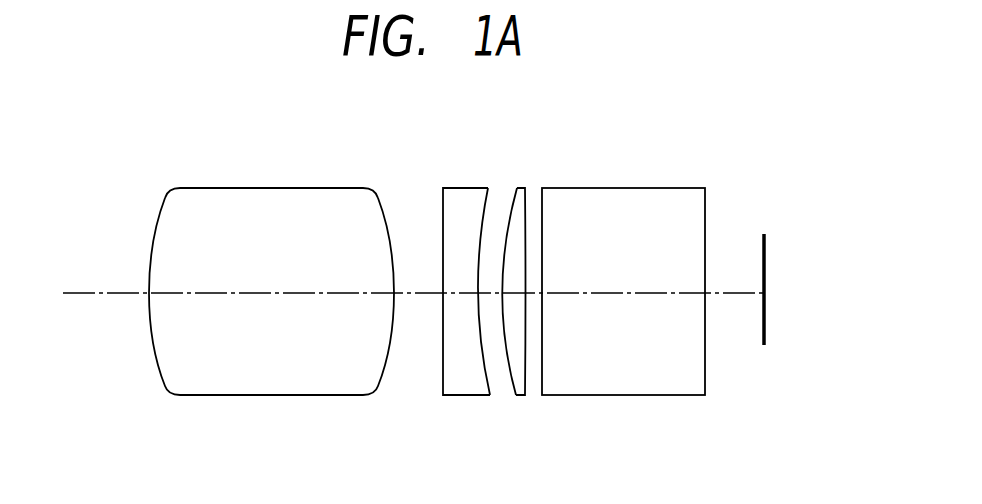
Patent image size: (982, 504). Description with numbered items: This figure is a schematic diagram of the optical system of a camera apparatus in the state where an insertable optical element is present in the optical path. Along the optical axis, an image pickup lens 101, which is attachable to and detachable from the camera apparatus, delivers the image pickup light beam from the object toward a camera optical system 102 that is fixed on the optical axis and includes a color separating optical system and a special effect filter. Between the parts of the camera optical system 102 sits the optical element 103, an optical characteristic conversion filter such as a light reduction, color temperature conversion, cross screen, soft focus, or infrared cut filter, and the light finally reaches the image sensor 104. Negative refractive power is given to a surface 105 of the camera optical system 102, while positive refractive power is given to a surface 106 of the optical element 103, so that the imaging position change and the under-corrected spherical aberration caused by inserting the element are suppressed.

The image pickup lens 101 is at (265, 187).
The camera optical system 102 is at (468, 187).
The optical element 103 is at (520, 187).
The image sensor 104 is at (767, 258).
The surface 105 is at (480, 332).
The surface 106 is at (502, 333).